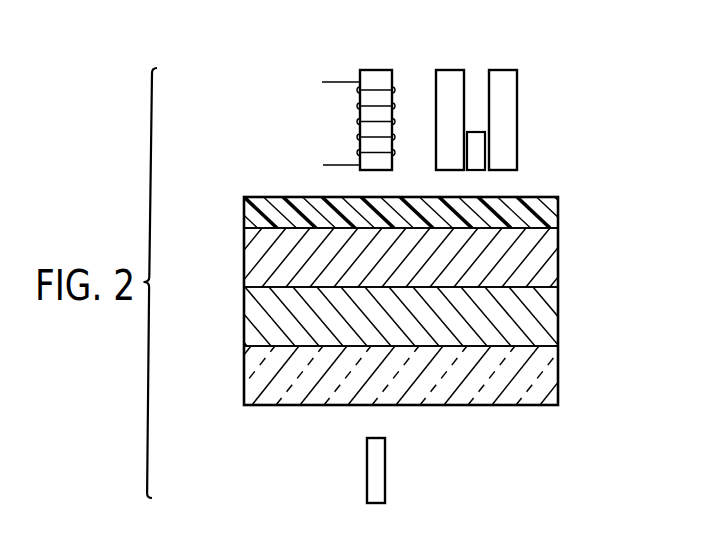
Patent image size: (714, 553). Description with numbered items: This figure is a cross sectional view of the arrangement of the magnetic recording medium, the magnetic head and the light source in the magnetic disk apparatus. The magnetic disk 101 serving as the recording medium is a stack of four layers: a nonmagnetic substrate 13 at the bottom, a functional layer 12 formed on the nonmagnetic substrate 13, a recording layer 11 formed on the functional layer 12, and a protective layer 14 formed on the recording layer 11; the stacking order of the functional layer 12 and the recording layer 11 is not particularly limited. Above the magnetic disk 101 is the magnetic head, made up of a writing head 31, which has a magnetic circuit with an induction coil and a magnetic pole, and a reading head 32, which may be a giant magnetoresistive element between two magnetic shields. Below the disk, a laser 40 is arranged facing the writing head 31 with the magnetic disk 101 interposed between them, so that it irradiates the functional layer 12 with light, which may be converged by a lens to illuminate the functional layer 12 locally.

The magnetic disk 101 is at (383, 301).
The recording layer 11 is at (556, 262).
The functional layer 12 is at (550, 324).
The nonmagnetic substrate 13 is at (550, 377).
The protective layer 14 is at (552, 215).
The writing head 31 is at (393, 67).
The reading head 32 is at (518, 67).
The laser 40 is at (376, 470).